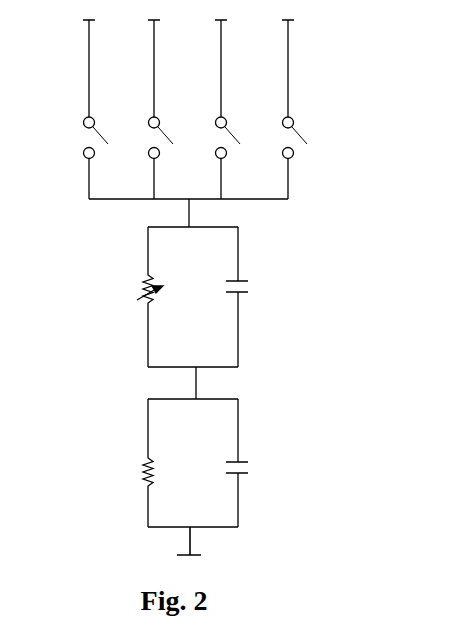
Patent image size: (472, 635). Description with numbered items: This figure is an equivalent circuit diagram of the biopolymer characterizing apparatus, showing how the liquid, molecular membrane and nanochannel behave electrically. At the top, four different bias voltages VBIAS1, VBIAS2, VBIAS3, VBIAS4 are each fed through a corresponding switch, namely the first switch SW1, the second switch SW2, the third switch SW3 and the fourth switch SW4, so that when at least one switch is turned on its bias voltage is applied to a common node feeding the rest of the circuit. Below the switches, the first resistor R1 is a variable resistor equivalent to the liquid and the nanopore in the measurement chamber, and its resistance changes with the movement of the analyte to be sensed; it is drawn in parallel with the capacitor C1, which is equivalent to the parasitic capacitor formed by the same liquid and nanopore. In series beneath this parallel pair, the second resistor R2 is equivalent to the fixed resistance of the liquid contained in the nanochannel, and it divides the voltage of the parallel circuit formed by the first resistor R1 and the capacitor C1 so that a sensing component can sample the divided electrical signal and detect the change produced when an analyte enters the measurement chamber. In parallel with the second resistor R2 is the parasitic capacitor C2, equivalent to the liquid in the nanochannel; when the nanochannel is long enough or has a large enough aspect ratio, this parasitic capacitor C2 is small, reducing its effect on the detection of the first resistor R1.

The bias voltage VBIAS1 is at (91, 59).
The bias voltage VBIAS2 is at (155, 59).
The bias voltage VBIAS3 is at (222, 59).
The bias voltage VBIAS4 is at (290, 59).
The first switch SW1 is at (76, 158).
The second switch SW2 is at (142, 158).
The third switch SW3 is at (210, 158).
The fourth switch SW4 is at (277, 158).
The first resistor R1 is at (136, 297).
The capacitor C1 is at (250, 297).
The second resistor R2 is at (131, 463).
The parasitic capacitor C2 is at (247, 463).